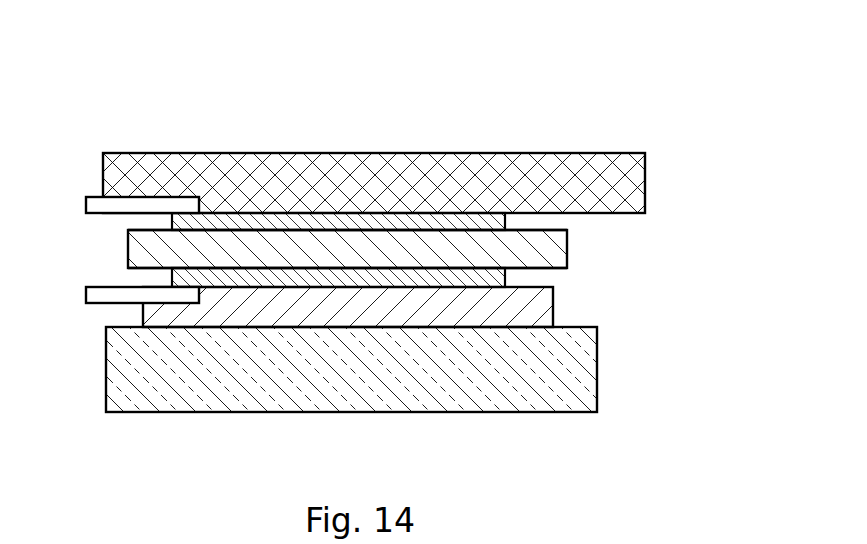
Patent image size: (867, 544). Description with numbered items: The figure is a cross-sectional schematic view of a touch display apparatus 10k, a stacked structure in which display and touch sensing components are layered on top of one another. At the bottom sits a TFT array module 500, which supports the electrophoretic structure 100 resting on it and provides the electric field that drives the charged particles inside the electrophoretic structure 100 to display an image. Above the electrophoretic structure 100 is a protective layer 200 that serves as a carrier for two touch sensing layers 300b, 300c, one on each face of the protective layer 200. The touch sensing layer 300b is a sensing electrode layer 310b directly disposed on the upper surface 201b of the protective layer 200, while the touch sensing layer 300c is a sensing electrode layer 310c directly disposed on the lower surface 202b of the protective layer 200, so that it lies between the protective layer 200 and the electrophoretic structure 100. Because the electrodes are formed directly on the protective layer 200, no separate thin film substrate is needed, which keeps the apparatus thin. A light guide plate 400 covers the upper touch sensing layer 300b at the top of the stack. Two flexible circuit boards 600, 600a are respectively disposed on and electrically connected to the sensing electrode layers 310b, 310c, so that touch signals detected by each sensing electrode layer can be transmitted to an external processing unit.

The touch display apparatus 10k is at (64, 28).
The electrophoretic structure 100 is at (535, 310).
The protective layer 200 is at (553, 250).
The upper surface 201b is at (151, 229).
The lower surface 202b is at (148, 272).
The touch sensing layer 300b is at (240, 210).
The touch sensing layer 300c is at (245, 291).
The sensing electrode layer 310b is at (322, 223).
The sensing electrode layer 310c is at (347, 277).
The light guide plate 400 is at (622, 187).
The TFT array module 500 is at (560, 373).
The flexible circuit board 600 is at (97, 208).
The flexible circuit board 600a is at (95, 298).